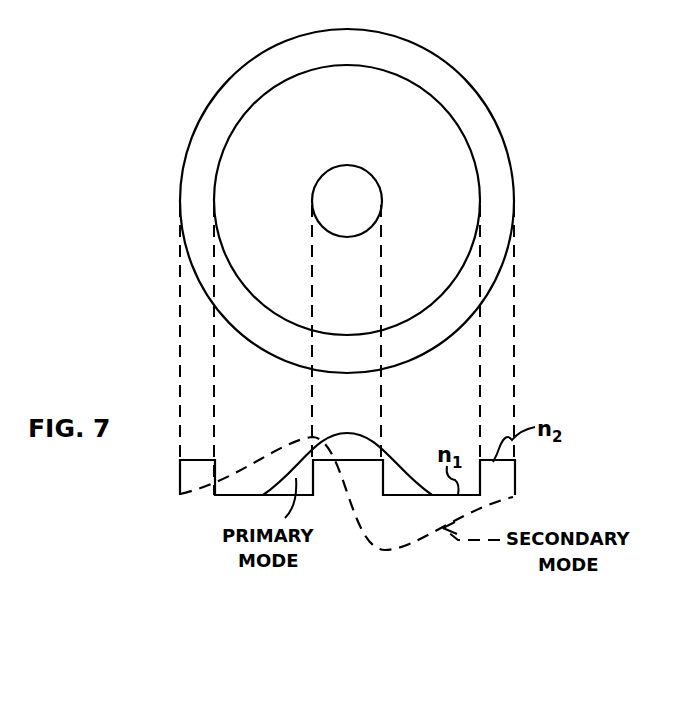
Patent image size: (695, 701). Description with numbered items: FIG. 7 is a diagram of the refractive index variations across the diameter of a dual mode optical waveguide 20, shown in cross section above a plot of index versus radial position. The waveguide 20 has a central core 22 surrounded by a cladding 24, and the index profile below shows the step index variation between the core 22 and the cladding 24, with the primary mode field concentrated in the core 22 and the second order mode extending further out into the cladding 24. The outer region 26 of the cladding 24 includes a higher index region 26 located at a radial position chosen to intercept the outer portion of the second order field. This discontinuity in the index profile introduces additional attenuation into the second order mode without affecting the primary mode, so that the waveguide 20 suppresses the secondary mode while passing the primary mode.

The optical waveguide 20 is at (514, 93).
The core 22 is at (322, 173).
The cladding 24 is at (242, 179).
The outer region 26 is at (495, 192).